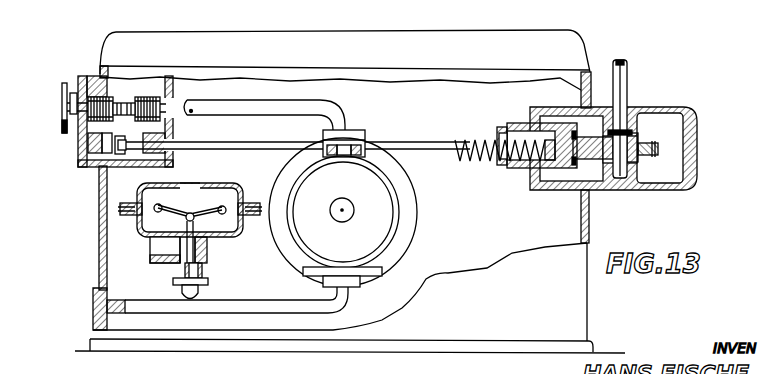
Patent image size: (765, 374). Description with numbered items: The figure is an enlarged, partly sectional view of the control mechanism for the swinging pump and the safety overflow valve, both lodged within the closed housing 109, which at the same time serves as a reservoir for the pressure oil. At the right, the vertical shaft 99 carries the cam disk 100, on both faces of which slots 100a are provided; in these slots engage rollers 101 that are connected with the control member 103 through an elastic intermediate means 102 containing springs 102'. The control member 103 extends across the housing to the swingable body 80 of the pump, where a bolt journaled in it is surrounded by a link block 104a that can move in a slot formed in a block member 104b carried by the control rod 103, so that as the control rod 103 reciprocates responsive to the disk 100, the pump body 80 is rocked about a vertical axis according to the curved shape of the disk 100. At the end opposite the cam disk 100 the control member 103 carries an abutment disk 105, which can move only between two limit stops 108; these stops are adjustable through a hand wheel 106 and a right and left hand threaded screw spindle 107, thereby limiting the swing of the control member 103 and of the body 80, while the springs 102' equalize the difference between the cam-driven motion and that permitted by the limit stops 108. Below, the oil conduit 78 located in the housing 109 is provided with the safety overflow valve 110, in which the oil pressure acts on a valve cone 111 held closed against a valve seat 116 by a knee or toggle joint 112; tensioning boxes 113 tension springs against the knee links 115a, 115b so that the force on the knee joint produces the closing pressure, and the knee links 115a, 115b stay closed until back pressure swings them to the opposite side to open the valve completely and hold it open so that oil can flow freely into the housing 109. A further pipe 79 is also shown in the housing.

The oil conduit 78 is at (273, 306).
The pipe 79 is at (228, 103).
The swingable body of the pump 80 is at (408, 215).
The vertical shaft 99 is at (627, 84).
The cam disk 100 is at (632, 163).
The slots 100a is at (641, 143).
The rollers 101 is at (568, 134).
The elastic intermediate means 102 is at (594, 146).
The springs 102' is at (505, 163).
The control member 103 is at (433, 145).
The link block 104a is at (358, 150).
The block member 104b is at (346, 144).
The abutment disk 105 is at (120, 152).
The hand wheel 106 is at (62, 95).
The right and left hand threaded screw spindle 107 is at (120, 101).
The limit stops 108 is at (146, 100).
The closed housing 109 is at (99, 262).
The safety overflow valve 110 is at (151, 256).
The valve cone 111 is at (188, 258).
The knee or toggle joint 112 is at (190, 214).
The tensioning boxes 113 is at (128, 216).
The knee link 115a is at (173, 187).
The knee link 115b is at (215, 179).
The valve seat 116 is at (203, 262).